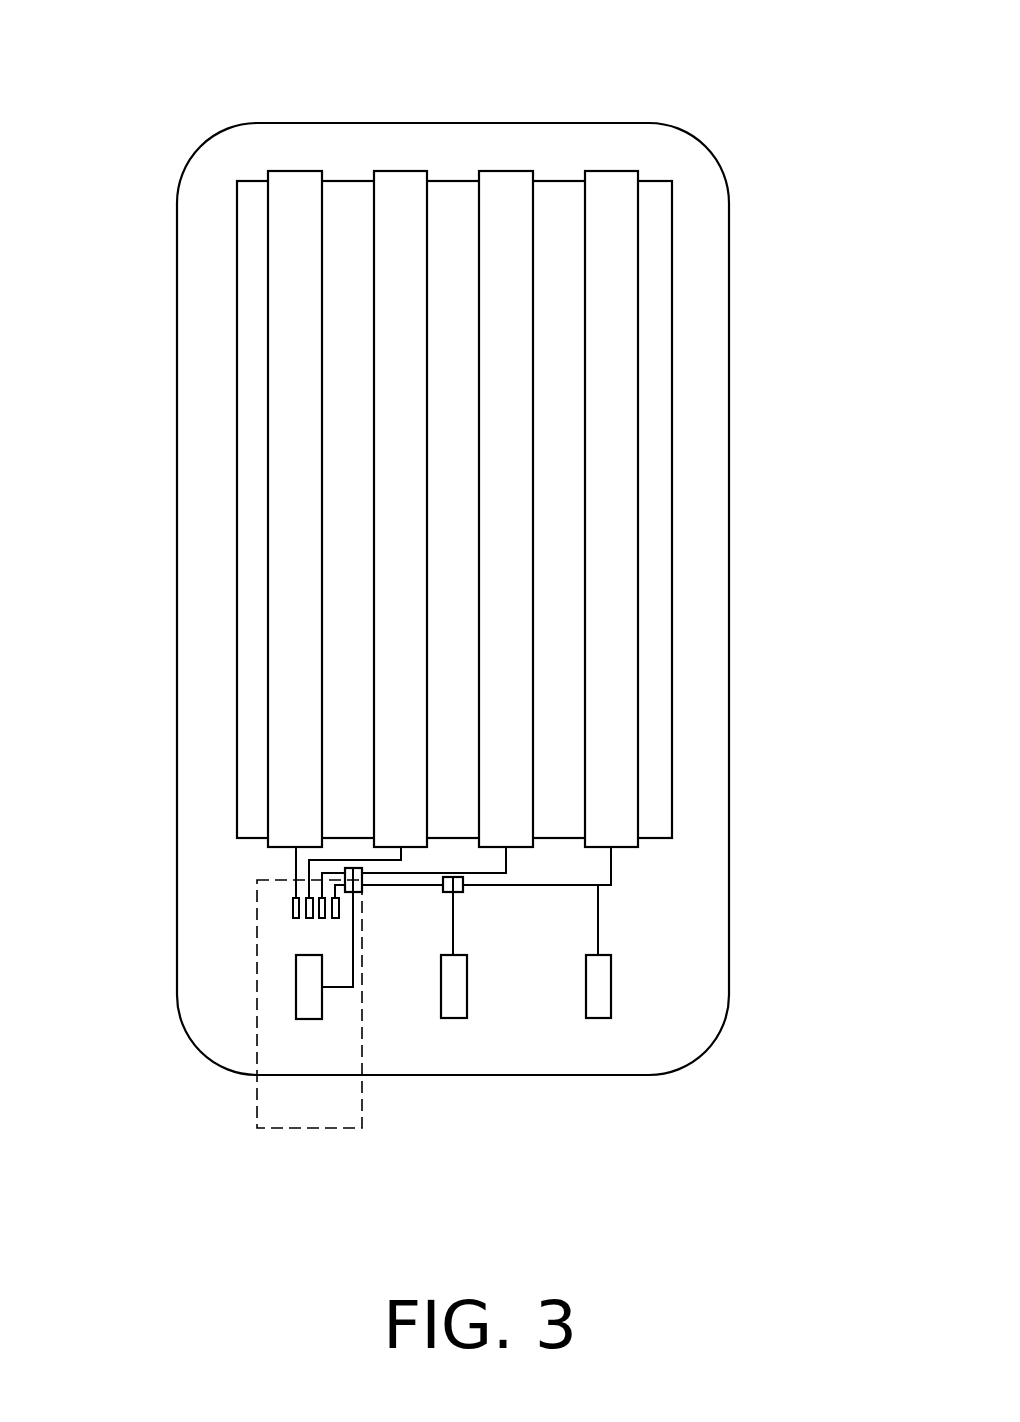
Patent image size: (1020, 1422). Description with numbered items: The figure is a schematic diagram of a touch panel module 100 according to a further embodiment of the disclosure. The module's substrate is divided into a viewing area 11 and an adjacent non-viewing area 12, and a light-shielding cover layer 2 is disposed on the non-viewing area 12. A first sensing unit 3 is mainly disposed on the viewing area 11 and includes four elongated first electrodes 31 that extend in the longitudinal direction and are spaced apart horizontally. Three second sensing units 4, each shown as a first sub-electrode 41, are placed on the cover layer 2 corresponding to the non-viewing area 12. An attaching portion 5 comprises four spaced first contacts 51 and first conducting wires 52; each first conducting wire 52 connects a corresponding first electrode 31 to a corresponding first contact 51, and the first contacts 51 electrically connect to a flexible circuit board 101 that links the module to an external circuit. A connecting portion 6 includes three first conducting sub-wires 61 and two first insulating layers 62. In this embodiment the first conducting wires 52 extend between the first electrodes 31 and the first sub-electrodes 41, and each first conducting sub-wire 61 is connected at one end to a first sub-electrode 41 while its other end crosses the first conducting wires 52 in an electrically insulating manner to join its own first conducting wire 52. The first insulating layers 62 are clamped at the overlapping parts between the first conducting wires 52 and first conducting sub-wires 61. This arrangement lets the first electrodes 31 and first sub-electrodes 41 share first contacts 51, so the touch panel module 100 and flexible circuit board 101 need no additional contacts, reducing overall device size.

The touch panel module 100 is at (122, 133).
The cover layer 2 is at (677, 860).
The viewing area 11 is at (652, 222).
The non-viewing area 12 is at (695, 740).
The first sensing unit 3 is at (612, 46).
The first electrode 31 is at (291, 185).
The attaching portion 5 is at (113, 822).
The first contact 51 is at (290, 902).
The first conducting wire 52 is at (290, 861).
The connecting portion 6 is at (113, 932).
The first conducting sub-wire 61 is at (353, 940).
The first insulating layer 62 is at (347, 893).
The second sensing unit 4 is at (610, 1138).
The first sub-electrode 41 is at (309, 1020).
The flexible circuit board 101 is at (280, 1108).